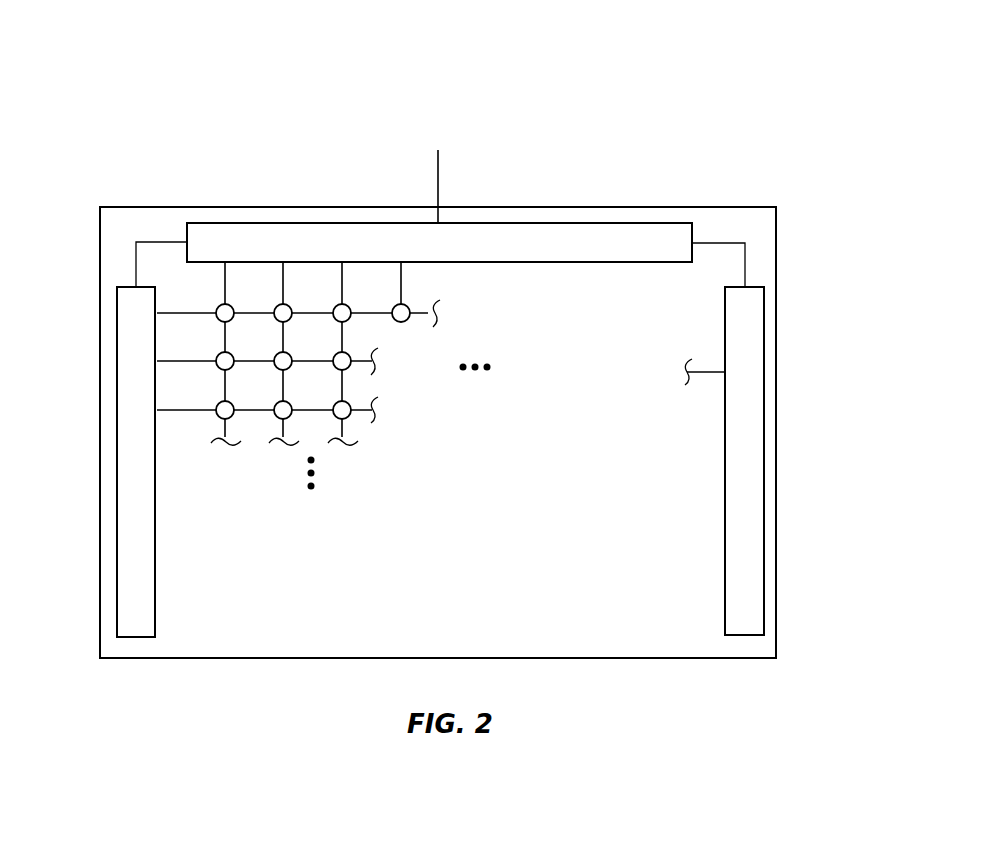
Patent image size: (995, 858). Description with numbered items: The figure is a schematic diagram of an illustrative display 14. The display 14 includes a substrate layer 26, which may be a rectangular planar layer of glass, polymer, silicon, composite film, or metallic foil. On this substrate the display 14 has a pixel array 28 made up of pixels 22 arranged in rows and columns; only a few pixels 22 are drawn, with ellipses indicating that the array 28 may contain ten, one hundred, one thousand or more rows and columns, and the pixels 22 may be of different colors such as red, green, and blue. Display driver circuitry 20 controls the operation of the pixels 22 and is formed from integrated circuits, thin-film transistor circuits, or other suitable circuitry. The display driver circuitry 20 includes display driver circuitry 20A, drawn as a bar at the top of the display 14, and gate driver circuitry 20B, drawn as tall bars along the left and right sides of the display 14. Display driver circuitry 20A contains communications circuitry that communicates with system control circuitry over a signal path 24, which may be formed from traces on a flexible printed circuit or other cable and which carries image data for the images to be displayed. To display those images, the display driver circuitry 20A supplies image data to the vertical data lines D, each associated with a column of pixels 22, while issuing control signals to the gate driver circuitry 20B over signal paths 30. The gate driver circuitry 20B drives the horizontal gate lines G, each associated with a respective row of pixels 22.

The display 14 is at (662, 61).
The display driver circuitry 20 is at (449, 381).
The display driver circuitry 20A is at (330, 223).
The gate driver circuitry 20B is at (117, 513).
The pixels 22 is at (408, 306).
The signal path 24 is at (438, 173).
The substrate layer 26 is at (717, 207).
The pixel array 28 is at (441, 388).
The signal paths 30 is at (136, 262).